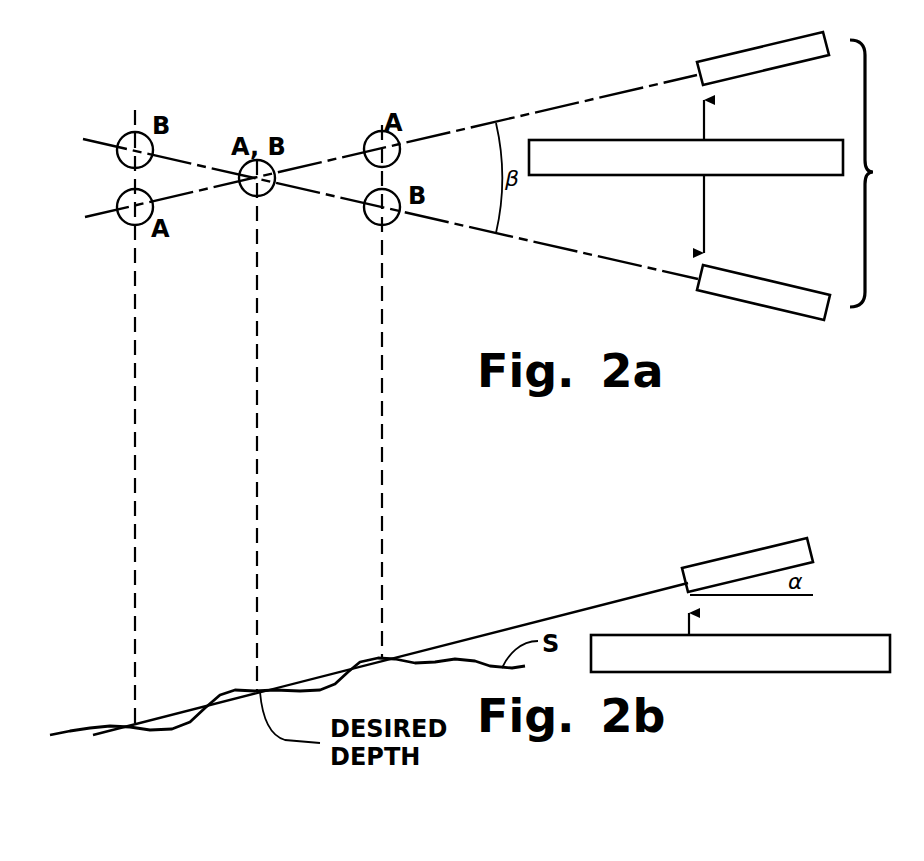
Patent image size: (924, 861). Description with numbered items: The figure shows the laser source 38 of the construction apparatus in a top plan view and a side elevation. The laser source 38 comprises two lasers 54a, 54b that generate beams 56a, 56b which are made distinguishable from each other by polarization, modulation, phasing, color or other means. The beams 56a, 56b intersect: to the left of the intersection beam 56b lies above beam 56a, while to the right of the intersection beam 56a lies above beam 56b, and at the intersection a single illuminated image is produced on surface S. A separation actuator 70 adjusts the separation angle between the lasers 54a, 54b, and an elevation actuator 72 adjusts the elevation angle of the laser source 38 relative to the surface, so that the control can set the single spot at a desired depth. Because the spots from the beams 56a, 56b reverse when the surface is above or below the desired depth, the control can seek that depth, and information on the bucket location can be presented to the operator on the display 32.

In FIG. 2A, the beam 56a is at (548, 108).
In FIG. 2B, the beam 56a is at (502, 627).
In FIG. 2A, the beam 56b is at (558, 247).
In FIG. 2B, the beam 56b is at (390, 638).
In FIG. 2A, the laser 54a is at (788, 68).
In FIG. 2A, the laser 54b is at (785, 283).
In FIG. 2A, the separation actuator 70 is at (777, 140).
In FIG. 2A, the laser source 38 is at (881, 173).
In FIG. 2B, the laser source 38 is at (745, 548).
In FIG. 2B, the elevation actuator 72 is at (815, 633).
In FIG. 2B, the operator display 32 is at (923, 545).